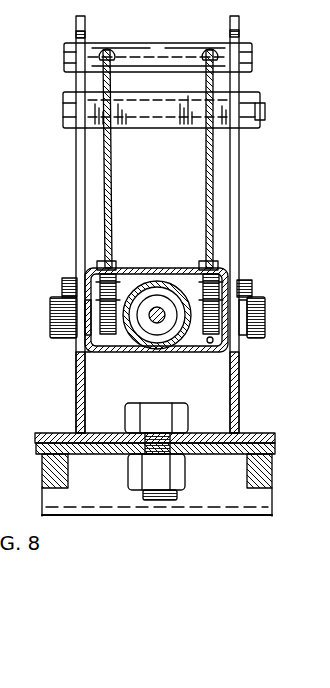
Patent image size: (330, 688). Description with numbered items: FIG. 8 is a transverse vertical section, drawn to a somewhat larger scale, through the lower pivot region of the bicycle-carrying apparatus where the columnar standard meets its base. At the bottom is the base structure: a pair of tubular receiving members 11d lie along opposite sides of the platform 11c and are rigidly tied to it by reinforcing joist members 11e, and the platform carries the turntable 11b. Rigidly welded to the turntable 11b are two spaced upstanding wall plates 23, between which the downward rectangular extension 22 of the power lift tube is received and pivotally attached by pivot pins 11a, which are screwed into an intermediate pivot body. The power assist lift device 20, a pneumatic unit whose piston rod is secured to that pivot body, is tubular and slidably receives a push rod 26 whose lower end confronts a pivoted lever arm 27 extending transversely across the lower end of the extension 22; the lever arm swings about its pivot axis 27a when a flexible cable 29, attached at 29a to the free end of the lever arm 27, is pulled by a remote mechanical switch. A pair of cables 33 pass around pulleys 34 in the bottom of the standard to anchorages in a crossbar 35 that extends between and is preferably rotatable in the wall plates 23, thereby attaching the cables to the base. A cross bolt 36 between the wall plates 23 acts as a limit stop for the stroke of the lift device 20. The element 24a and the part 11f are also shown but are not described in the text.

The crossbar 35 is at (158, 43).
The cross bolt 36 is at (160, 128).
The cables 33 is at (106, 190).
The upstanding wall plates 23 is at (76, 227).
The pulleys 34 is at (99, 264).
The extension 22 is at (160, 270).
The power assist lift device 20 is at (157, 330).
The bracket leg 24a is at (84, 360).
The pivot pins 11a is at (50, 318).
The turntable 11b is at (46, 433).
The platform 11c is at (7, 440).
The reinforcing joist members 11e is at (47, 473).
The tubular receiving members 11d is at (270, 500).
The center bolt nut 11f is at (160, 500).
The flexible cable 29 is at (6, 35).
The cable attachment 29a is at (14, 61).
The lever arm 27 is at (6, 96).
The push rod 26 is at (6, 124).
The pivot axis 27a is at (11, 155).